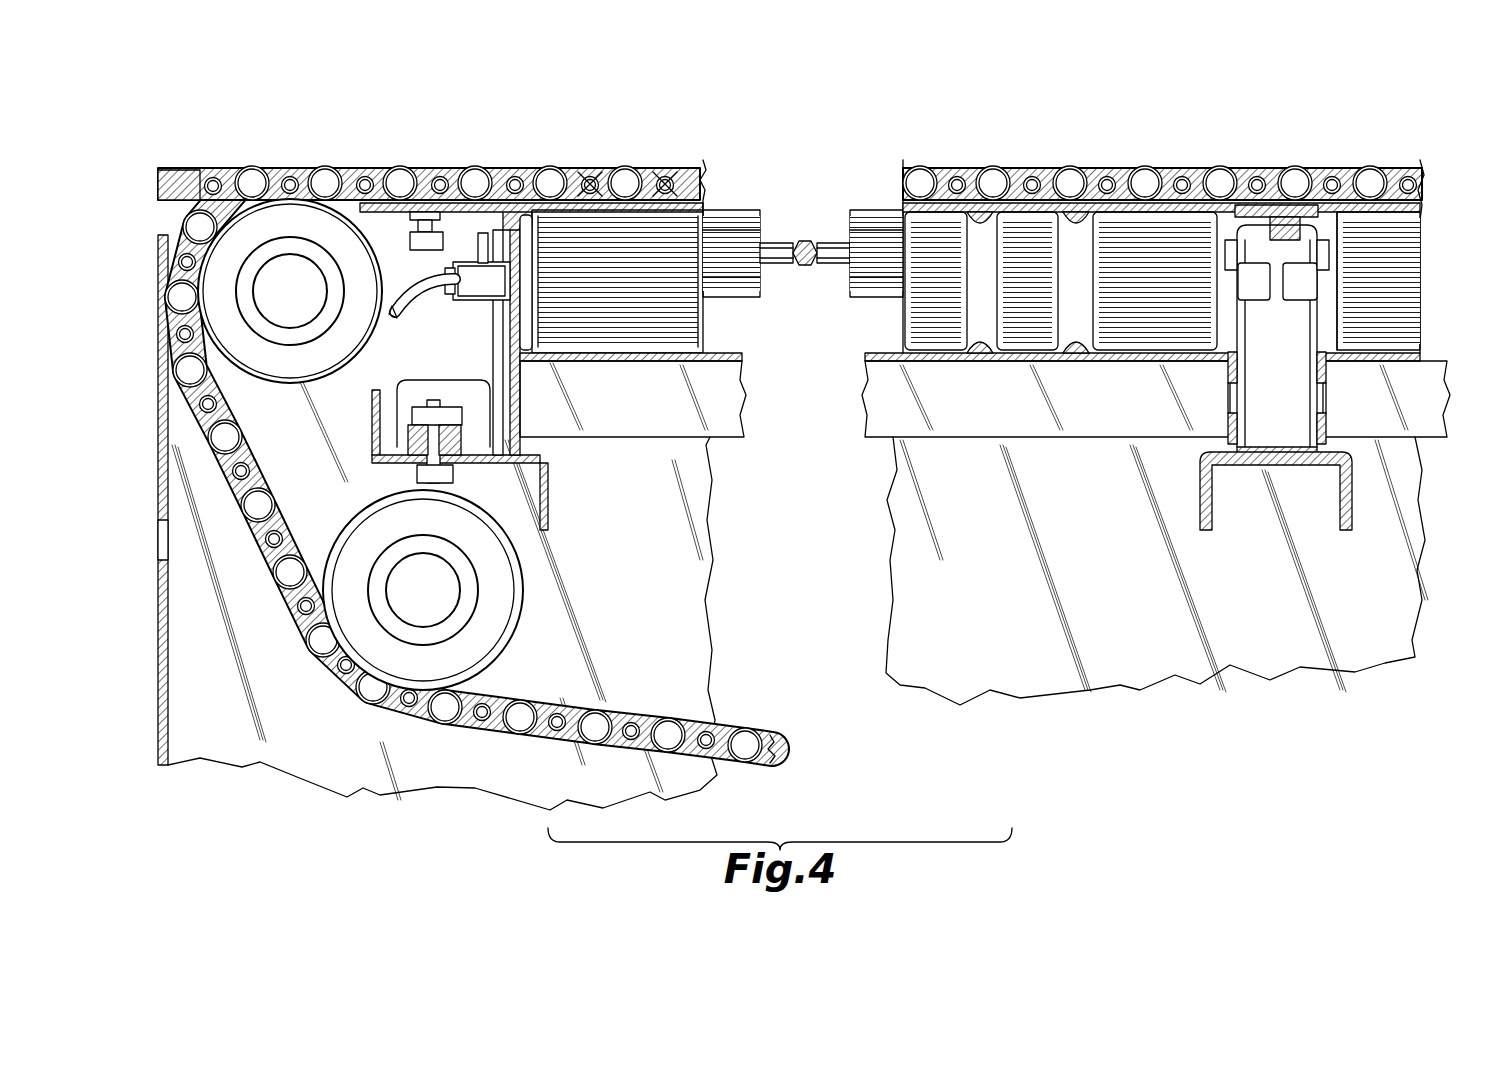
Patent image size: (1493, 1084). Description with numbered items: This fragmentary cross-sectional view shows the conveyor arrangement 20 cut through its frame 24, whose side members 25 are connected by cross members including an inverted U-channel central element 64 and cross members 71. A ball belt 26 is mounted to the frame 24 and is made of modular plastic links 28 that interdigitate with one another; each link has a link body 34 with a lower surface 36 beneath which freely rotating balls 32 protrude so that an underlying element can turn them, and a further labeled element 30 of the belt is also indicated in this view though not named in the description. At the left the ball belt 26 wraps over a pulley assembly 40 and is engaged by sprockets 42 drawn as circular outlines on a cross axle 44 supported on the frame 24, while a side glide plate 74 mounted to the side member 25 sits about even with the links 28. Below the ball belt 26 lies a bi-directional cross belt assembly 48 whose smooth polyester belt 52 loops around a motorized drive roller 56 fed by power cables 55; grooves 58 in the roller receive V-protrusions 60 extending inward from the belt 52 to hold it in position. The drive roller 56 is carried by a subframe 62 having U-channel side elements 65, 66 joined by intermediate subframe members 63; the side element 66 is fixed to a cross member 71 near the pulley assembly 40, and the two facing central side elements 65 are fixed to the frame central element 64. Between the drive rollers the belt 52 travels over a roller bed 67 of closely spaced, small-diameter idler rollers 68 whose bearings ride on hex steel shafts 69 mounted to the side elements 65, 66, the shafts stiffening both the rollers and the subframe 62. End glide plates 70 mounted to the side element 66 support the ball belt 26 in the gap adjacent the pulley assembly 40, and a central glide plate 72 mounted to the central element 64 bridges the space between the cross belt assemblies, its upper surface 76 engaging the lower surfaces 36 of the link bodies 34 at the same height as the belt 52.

The conveyor arrangement 20 is at (1105, 158).
The frame 24 is at (158, 630).
The side members 25 is at (410, 800).
The ball belt 26 is at (373, 170).
The modular plastic links 28 is at (598, 170).
The small roller 30 is at (582, 172).
The balls 32 is at (630, 170).
The link body 34 is at (655, 170).
The lower surface 36 is at (645, 268).
The pulley assemblies 40 is at (290, 324).
The sprockets 42 is at (465, 590).
The cross axle 44 is at (443, 624).
The cross belt assembly 48 is at (893, 160).
The belt 52 is at (1185, 170).
The power cables 55 is at (412, 306).
The second drive roller 56 is at (520, 310).
The grooves 58 is at (975, 296).
The V-protrusions 60 is at (970, 329).
The subframe 62 is at (1245, 428).
The intermediate subframe members 63 is at (614, 407).
The central element 64 is at (1200, 500).
The side element 65 is at (1245, 363).
The side element 66 is at (500, 347).
The roller bed 67 is at (868, 210).
The idler rollers 68 is at (752, 300).
The hex steel shafts 69 is at (818, 241).
The end glide plates 70 is at (356, 218).
The cross members 71 is at (548, 500).
The central glide plate 72 is at (1273, 205).
The side glide plates 74 is at (196, 170).
The upper surface 76 is at (1330, 170).